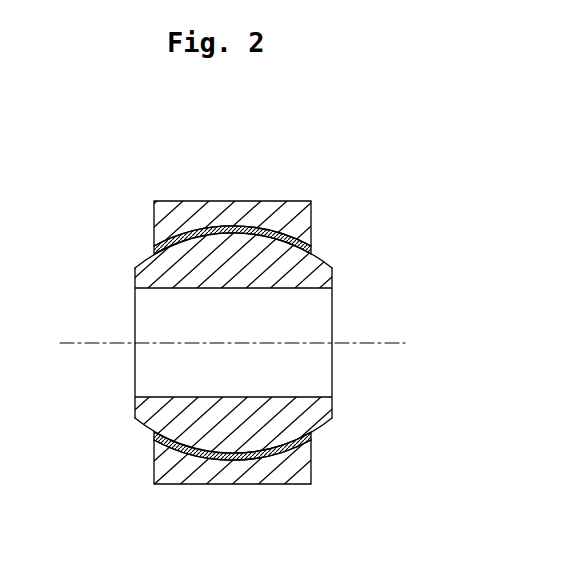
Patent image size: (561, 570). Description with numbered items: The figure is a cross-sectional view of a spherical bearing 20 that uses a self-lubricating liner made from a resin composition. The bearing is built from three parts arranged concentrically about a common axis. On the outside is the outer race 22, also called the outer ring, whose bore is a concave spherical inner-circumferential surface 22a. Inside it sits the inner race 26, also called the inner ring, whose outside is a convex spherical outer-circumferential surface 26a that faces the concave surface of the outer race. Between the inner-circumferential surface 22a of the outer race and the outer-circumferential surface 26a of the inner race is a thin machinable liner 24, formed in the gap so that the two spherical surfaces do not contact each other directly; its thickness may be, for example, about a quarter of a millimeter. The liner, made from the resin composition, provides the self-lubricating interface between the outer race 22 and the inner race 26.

The spherical bearing 20 is at (324, 207).
The outer race 22 is at (153, 207).
The concave spherical inner-circumferential surface 22a is at (298, 230).
The machinable liner 24 is at (155, 242).
The inner race 26 is at (148, 279).
The convex spherical outer-circumferential surface 26a is at (332, 262).